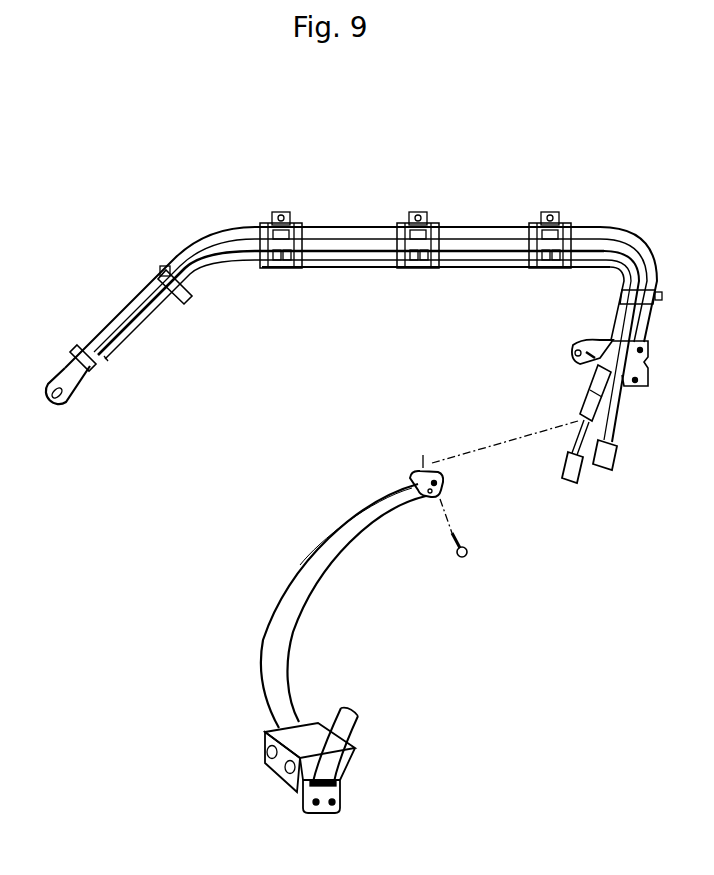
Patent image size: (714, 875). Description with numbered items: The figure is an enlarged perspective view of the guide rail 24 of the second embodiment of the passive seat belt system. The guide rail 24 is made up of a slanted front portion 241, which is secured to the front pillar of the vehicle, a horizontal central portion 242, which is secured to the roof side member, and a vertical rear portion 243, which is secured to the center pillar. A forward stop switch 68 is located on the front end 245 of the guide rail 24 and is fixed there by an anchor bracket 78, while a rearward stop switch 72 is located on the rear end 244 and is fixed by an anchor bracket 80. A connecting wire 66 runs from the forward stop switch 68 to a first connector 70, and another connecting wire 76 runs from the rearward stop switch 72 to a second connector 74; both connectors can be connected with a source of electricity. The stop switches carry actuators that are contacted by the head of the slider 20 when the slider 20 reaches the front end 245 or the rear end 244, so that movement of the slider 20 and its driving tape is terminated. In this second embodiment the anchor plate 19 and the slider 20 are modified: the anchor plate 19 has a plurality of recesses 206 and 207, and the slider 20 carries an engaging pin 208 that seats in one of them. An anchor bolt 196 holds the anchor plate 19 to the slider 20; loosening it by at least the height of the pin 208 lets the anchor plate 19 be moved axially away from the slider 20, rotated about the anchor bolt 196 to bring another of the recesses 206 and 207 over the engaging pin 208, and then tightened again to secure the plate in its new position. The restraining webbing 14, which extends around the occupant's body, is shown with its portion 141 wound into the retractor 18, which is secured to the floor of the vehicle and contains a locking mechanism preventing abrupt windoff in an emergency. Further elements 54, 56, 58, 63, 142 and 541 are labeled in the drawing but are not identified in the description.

The restraining webbing 14 is at (352, 535).
The retractor 18 is at (306, 722).
The anchor plate 19 is at (418, 470).
The slider 20 is at (570, 349).
The guide rail 24 is at (493, 242).
The clip 54 is at (299, 275).
The clamp 56 is at (266, 270).
The bolt 58 is at (283, 211).
The bolt 63 is at (552, 216).
The connecting wire 66 is at (645, 262).
The forward stop switch 68 is at (78, 360).
The first connector 70 is at (620, 458).
The rearward stop switch 72 is at (584, 411).
The second connector 74 is at (576, 484).
The connecting wire 76 is at (568, 448).
The anchor bracket 78 is at (72, 398).
The anchor bracket 80 is at (650, 367).
The portion of the webbing 141 is at (265, 701).
The arm 142 is at (385, 504).
The anchor bolt 196 is at (466, 557).
The recess 206 is at (446, 477).
The recess 207 is at (445, 492).
The engaging pin 208 is at (582, 368).
The slanted front portion 241 is at (130, 308).
The horizontal central portion 242 is at (356, 238).
The vertical rear portion 243 is at (646, 318).
The rear end 244 is at (616, 400).
The front end 245 is at (90, 353).
The clamp 541 is at (166, 264).